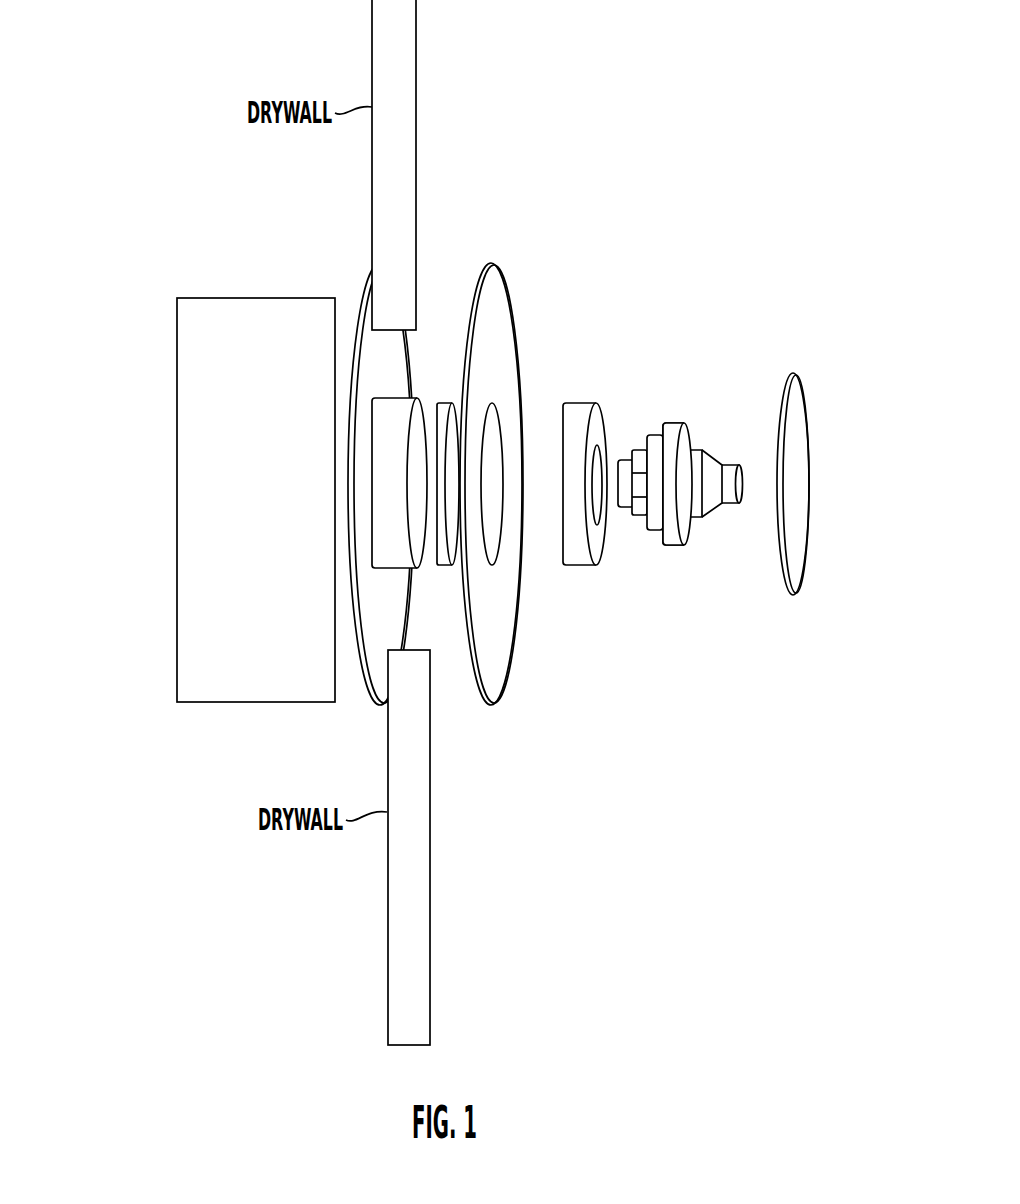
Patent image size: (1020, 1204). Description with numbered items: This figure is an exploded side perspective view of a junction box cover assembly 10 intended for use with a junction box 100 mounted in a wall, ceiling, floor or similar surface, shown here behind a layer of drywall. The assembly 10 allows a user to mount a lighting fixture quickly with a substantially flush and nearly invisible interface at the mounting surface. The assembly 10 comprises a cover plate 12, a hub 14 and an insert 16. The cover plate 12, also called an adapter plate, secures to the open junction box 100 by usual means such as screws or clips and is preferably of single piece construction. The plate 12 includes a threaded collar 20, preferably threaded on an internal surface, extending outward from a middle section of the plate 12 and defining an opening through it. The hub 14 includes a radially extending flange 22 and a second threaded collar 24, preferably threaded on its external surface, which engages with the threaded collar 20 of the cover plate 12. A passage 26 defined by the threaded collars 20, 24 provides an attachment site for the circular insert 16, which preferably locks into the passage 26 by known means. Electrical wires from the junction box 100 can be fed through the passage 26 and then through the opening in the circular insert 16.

The junction box cover assembly 10 is at (816, 278).
The cover plate 12 is at (424, 340).
The hub 14 is at (562, 503).
The insert 16 is at (603, 385).
The threaded collar 20 is at (400, 569).
The flange 22 is at (517, 612).
The second threaded collar 24 is at (447, 568).
The passage 26 is at (512, 509).
The junction box 100 is at (170, 519).